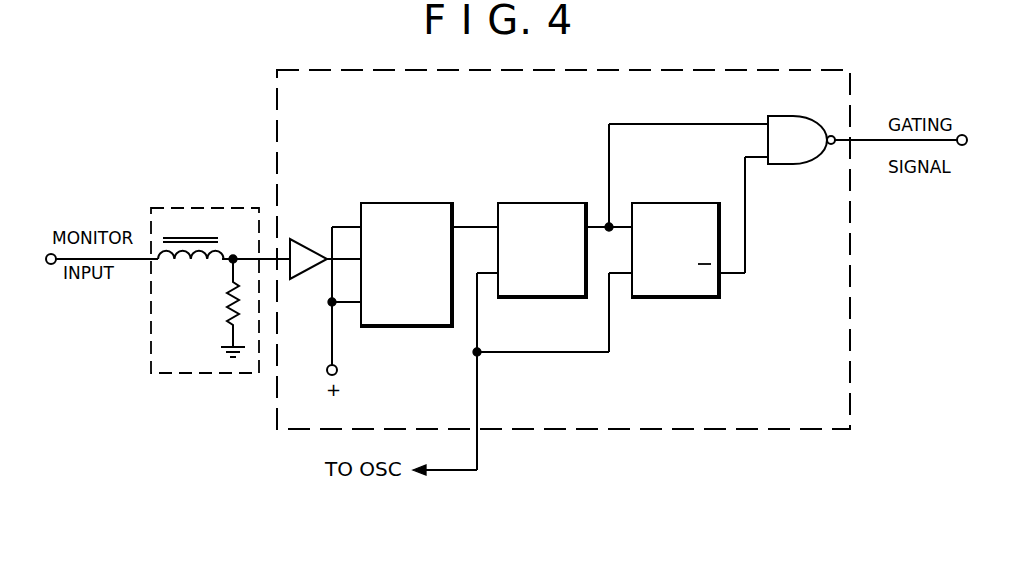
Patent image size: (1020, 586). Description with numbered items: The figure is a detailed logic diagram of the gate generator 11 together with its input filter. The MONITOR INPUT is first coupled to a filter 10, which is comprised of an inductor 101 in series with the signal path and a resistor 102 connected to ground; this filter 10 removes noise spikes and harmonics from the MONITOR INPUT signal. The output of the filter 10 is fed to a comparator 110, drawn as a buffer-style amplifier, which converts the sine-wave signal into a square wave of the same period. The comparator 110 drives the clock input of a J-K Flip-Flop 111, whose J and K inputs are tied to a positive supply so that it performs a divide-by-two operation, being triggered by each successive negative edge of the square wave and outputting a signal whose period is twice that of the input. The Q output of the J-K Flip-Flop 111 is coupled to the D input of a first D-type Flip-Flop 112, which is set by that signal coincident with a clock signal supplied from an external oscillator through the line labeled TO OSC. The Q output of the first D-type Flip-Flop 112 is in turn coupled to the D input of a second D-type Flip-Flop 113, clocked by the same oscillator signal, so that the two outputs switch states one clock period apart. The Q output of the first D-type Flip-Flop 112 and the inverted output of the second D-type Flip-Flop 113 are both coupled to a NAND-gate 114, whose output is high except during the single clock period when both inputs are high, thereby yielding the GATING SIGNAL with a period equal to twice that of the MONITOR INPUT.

The filter 10 is at (256, 232).
The inductor 101 is at (201, 261).
The resistor 102 is at (226, 306).
The gate generator 11 is at (313, 104).
The comparator 110 is at (302, 240).
The J-K Flip-Flop 111 is at (405, 203).
The first D-type Flip-Flop 112 is at (537, 203).
The second D-type Flip-Flop 113 is at (667, 203).
The NAND-gate 114 is at (793, 165).